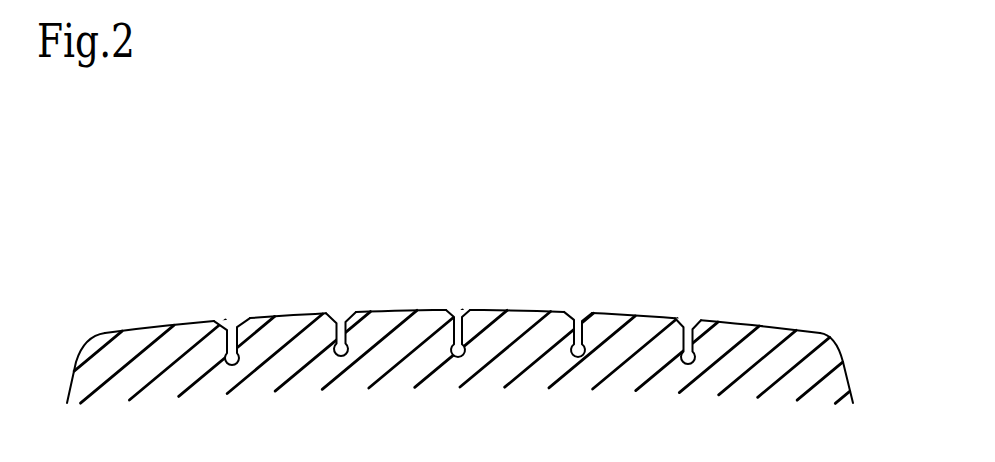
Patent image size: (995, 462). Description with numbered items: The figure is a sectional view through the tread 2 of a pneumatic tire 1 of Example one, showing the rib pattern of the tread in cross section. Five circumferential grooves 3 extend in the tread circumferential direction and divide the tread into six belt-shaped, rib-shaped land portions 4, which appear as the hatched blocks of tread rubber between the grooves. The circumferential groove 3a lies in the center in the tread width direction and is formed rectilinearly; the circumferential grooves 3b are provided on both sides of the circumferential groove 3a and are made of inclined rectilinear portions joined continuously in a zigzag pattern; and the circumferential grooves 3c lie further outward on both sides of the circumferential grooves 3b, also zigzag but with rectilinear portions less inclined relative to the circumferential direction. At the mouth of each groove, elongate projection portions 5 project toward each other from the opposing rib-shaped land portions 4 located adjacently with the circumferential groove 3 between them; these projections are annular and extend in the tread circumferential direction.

The pneumatic tire 1 is at (121, 229).
The tread 2 is at (413, 237).
The circumferential grooves 3 is at (245, 252).
The central circumferential groove 3a is at (458, 315).
The intermediate circumferential grooves 3b is at (338, 319).
The outer circumferential grooves 3c is at (227, 323).
The rib-shaped land portions 4 is at (160, 332).
The elongate projection portions 5 is at (222, 345).